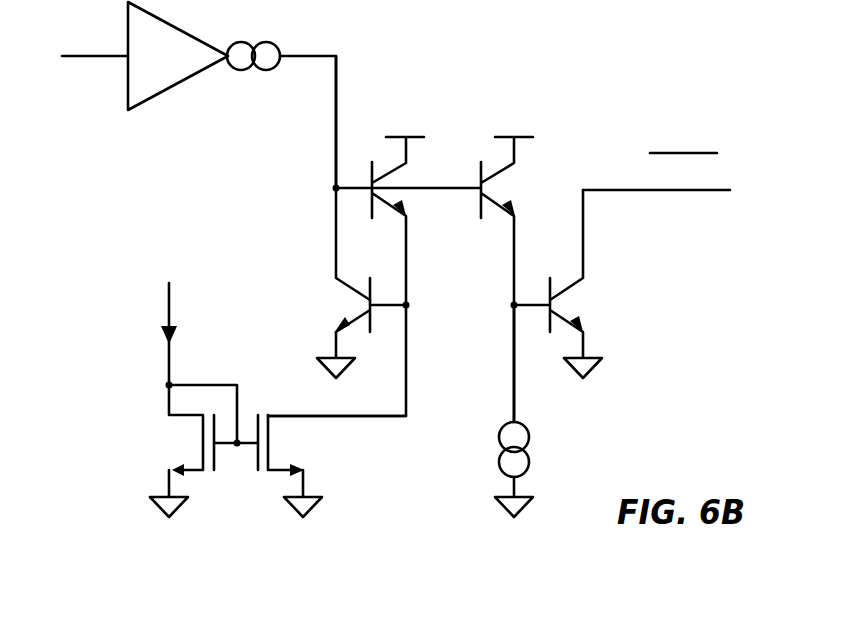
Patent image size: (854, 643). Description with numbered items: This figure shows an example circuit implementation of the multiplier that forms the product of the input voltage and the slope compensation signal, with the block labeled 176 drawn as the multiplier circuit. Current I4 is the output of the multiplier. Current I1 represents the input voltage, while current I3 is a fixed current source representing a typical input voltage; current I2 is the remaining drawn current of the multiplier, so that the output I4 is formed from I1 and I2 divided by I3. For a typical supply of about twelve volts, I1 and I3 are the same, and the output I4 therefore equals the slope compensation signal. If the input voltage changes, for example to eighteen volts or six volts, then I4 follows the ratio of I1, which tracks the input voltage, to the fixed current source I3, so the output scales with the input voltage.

The current multiplier circuit 176 is at (396, 260).
The current I1 is at (321, 92).
The second current I2 is at (383, 429).
The fixed current source I3 is at (496, 312).
The output current I4 is at (693, 209).